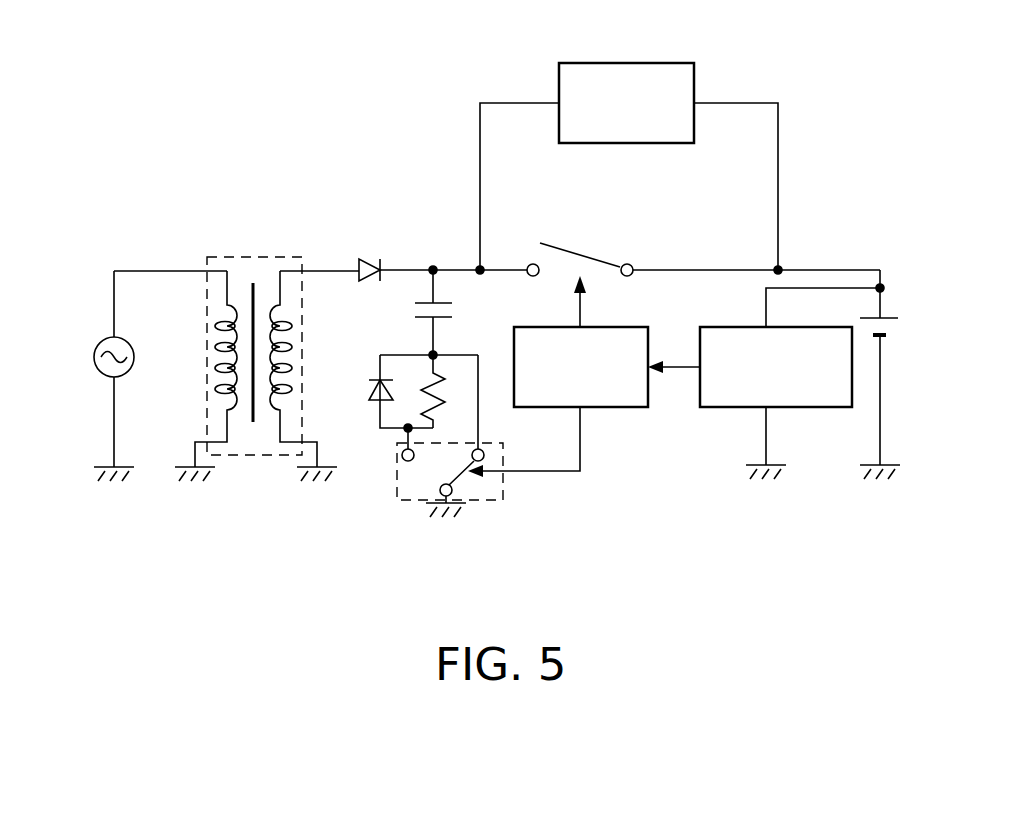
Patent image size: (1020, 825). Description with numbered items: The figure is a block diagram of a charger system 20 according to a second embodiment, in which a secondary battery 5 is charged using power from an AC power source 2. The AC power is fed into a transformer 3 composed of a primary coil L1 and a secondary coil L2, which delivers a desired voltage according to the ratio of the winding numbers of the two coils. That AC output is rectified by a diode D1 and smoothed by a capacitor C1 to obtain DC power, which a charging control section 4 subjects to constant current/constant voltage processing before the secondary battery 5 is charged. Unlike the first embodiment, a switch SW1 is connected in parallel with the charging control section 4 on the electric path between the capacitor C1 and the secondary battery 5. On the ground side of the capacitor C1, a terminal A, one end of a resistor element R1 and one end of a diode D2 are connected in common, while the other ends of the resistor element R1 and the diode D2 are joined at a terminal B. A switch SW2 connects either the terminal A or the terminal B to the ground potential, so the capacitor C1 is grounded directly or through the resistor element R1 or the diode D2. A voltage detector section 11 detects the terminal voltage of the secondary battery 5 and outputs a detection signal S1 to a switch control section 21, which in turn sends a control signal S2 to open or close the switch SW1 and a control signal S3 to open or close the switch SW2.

The AC power source 2 is at (98, 343).
The transformer 3 is at (265, 335).
The charging control section 4 is at (623, 63).
The secondary battery 5 is at (890, 317).
The voltage detector section 11 is at (812, 408).
The charger system 20 is at (310, 158).
The switch control section 21 is at (637, 408).
The primary coil L1 is at (215, 337).
The secondary coil L2 is at (296, 354).
The diode D1 is at (372, 257).
The diode D2 is at (373, 403).
The capacitor C1 is at (443, 303).
The resistor element R1 is at (445, 378).
The switch SW1 is at (583, 248).
The switch SW2 is at (415, 465).
The terminal A is at (486, 449).
The terminal B is at (416, 450).
The detection signal S1 is at (682, 368).
The control signal S2 is at (582, 315).
The control signal S3 is at (550, 473).